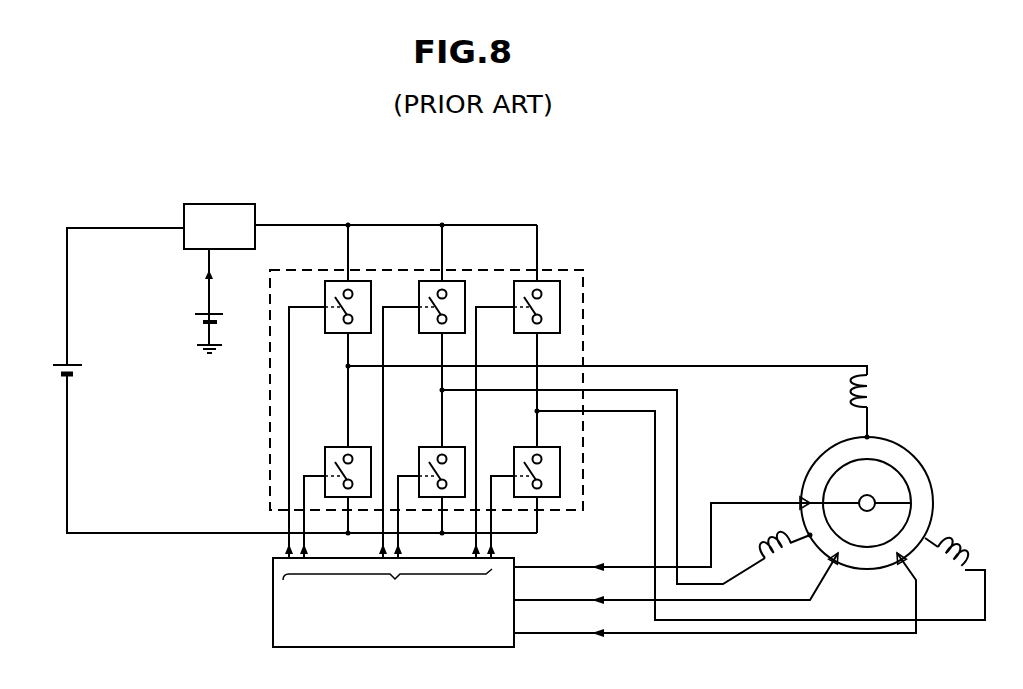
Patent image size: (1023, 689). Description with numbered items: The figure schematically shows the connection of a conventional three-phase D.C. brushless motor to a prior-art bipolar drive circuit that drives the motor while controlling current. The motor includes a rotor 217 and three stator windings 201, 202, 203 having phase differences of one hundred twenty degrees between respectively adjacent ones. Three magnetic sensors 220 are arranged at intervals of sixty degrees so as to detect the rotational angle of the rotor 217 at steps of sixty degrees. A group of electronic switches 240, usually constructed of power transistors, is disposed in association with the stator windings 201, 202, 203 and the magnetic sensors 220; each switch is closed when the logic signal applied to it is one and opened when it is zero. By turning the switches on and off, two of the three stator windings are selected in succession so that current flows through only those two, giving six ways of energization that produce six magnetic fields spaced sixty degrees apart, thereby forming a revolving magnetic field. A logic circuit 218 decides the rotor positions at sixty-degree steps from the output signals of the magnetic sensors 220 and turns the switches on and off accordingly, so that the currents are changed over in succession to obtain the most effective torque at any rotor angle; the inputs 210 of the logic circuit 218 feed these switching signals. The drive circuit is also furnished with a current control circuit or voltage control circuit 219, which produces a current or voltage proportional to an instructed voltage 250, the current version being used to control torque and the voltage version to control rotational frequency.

The current control circuit or voltage control circuit 219 is at (222, 204).
The instructed voltage 250 is at (200, 312).
The group of electronic switches 240 is at (585, 298).
The input terminals 210 is at (387, 588).
The logic circuit 218 is at (271, 618).
The stator winding 201 is at (880, 395).
The stator winding 202 is at (778, 539).
The stator winding 203 is at (958, 547).
The rotor 217 is at (902, 473).
The magnetic sensors 220 is at (803, 487).